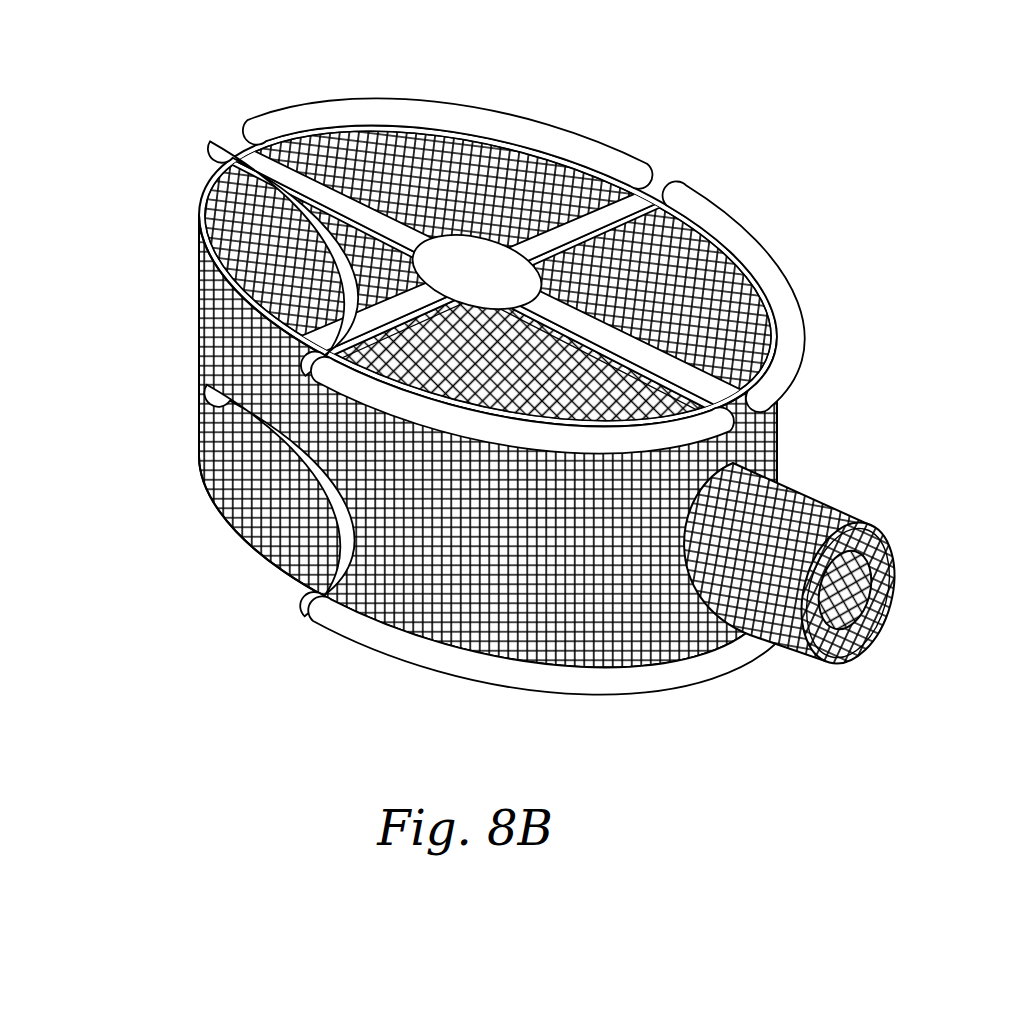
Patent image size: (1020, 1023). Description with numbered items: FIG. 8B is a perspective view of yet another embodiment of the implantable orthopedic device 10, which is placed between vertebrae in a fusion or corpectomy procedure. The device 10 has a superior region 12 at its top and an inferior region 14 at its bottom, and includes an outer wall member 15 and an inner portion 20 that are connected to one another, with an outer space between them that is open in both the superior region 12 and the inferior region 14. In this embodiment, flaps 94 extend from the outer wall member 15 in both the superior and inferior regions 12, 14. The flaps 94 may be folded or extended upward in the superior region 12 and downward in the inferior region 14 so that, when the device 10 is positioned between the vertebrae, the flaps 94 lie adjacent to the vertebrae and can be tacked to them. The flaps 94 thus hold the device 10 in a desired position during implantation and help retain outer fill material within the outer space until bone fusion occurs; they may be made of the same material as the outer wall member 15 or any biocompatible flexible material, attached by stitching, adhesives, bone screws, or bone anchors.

The implantable orthopedic device 10 is at (152, 47).
The superior region 12 is at (200, 208).
The inferior region 14 is at (205, 465).
The outer wall member 15 is at (197, 349).
The inner portion 20 is at (478, 240).
The flaps 94 is at (322, 113).